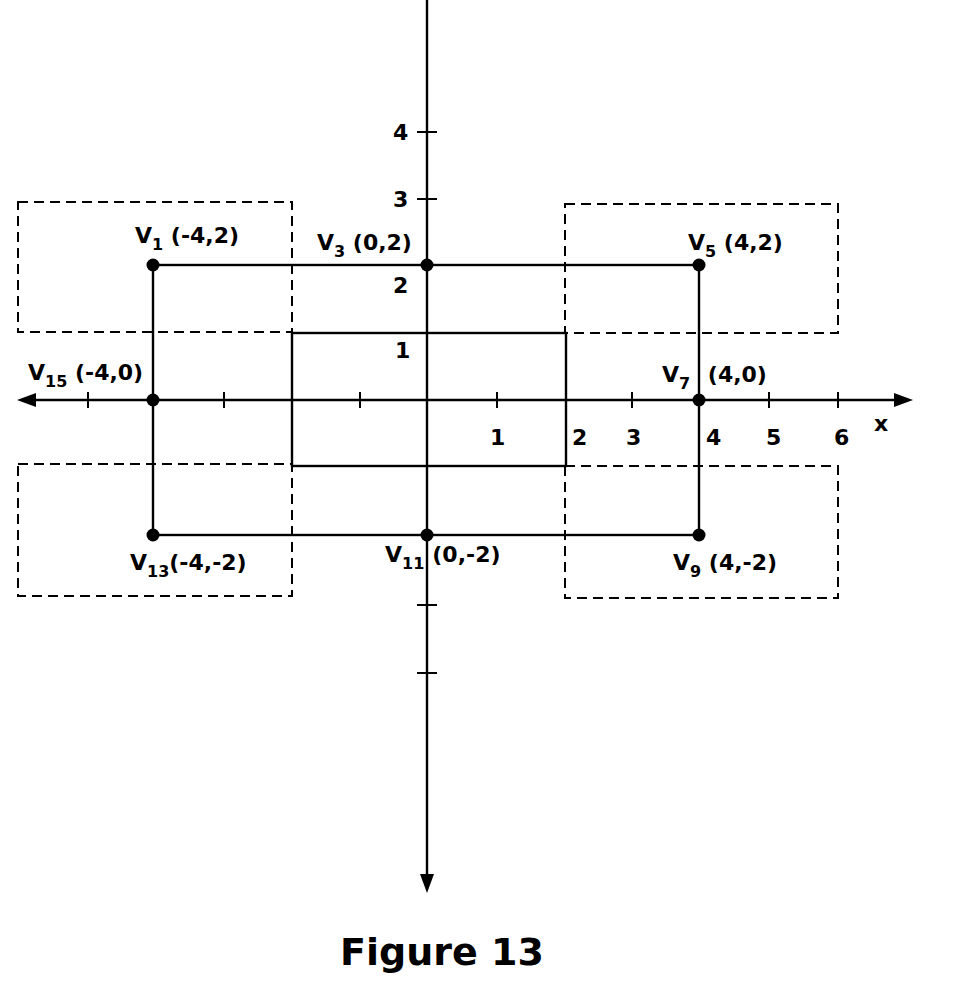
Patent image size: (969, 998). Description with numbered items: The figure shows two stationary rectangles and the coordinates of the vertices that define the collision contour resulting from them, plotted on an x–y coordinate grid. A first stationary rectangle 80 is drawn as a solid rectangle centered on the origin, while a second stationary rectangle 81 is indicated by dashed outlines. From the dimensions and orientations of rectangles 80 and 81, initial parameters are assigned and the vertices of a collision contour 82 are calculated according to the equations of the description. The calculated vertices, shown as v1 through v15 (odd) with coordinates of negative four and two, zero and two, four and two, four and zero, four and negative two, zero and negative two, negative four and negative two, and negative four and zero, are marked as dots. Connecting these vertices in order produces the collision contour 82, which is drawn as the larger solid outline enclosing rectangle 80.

The stationary rectangle 80 is at (524, 372).
The stationary rectangle 81 is at (809, 515).
The collision contour 82 is at (444, 258).